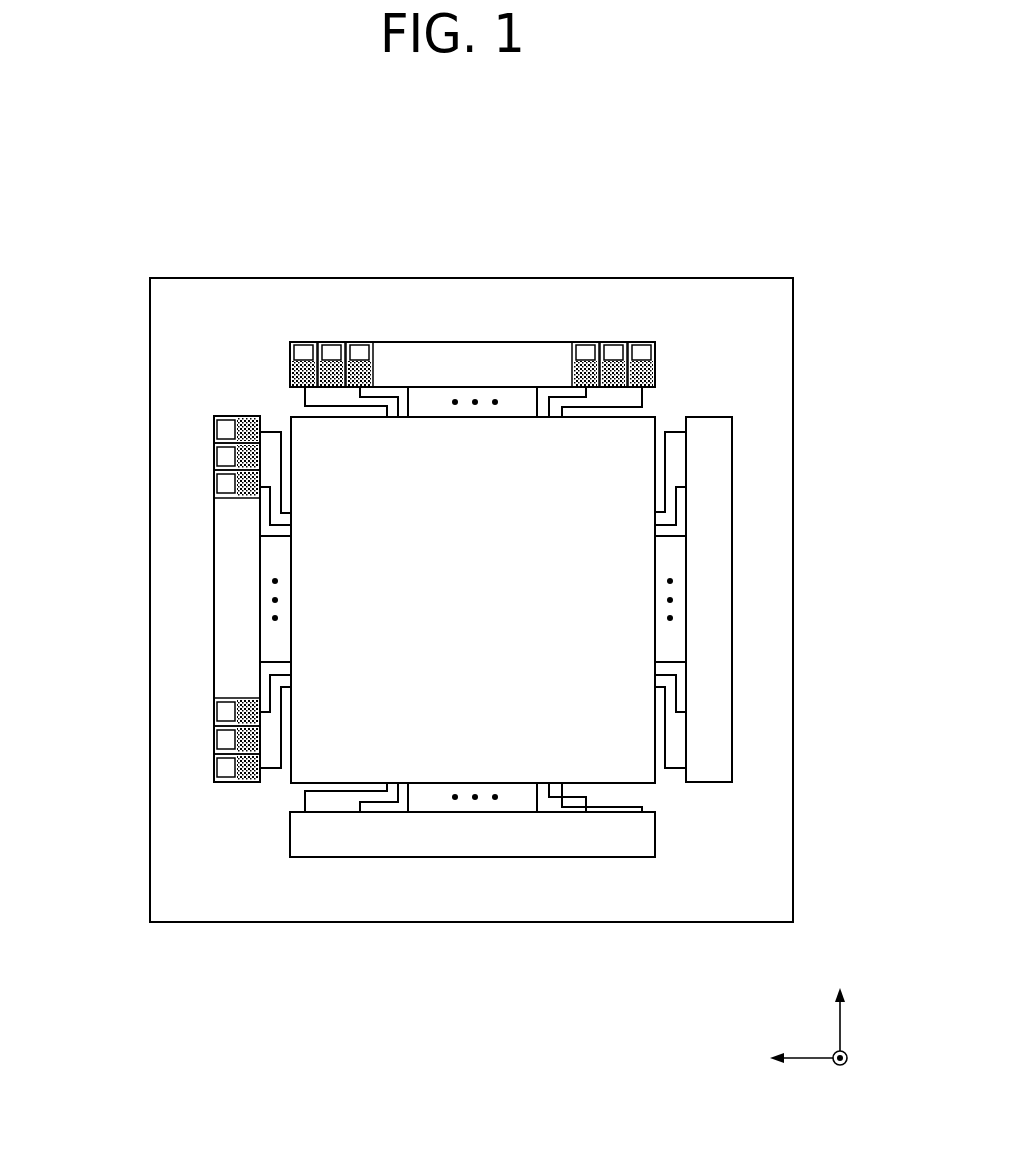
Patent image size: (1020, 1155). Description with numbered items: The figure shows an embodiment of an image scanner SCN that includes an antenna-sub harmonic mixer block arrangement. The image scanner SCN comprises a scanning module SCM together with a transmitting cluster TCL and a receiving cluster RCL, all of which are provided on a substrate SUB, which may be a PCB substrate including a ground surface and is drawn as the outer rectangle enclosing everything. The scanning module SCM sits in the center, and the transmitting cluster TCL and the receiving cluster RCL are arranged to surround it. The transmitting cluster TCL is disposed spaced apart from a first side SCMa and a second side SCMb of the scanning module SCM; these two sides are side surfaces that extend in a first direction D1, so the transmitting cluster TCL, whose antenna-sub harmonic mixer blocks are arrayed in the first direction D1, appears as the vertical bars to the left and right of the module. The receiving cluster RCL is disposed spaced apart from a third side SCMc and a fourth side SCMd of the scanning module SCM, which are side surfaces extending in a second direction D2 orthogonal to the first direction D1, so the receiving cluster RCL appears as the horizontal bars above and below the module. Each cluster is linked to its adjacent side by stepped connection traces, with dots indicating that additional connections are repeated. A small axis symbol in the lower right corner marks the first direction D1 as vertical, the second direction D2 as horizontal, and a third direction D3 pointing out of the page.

The image scanner SCN is at (787, 217).
The substrate SUB is at (215, 910).
The receiving cluster RCL is at (447, 342).
The transmitting cluster TCL is at (214, 578).
The scanning module SCM is at (655, 553).
The first side SCMa is at (655, 643).
The second side SCMb is at (291, 643).
The third side SCMc is at (520, 417).
The fourth side SCMd is at (517, 783).
The first direction D1 is at (840, 1005).
The second direction D2 is at (786, 1059).
The third direction D3 is at (841, 1073).